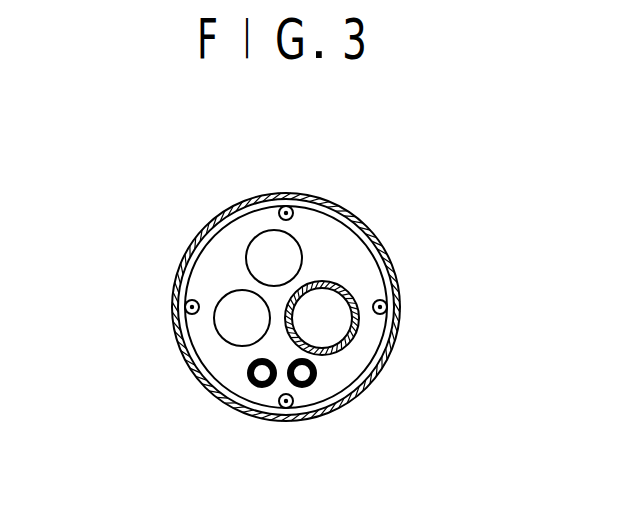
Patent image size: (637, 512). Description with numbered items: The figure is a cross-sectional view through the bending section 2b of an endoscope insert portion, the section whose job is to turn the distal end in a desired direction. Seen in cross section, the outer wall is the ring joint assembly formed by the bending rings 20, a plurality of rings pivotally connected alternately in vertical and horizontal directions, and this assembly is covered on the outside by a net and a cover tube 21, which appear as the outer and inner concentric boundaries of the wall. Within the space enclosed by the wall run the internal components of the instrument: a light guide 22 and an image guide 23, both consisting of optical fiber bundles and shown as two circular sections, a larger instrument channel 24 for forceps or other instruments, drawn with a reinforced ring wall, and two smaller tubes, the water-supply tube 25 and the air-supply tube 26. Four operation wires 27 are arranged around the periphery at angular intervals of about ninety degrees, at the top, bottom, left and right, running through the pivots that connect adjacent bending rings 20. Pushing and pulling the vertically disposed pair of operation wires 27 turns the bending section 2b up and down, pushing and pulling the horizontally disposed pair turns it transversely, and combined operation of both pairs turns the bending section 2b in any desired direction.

The bending section 2b is at (225, 207).
The bending rings 20 is at (358, 217).
The cover tube 21 is at (203, 390).
The light guide 22 is at (246, 262).
The image guide 23 is at (222, 323).
The instrument channel 24 is at (352, 292).
The water-supply tube 25 is at (250, 386).
The air-supply tube 26 is at (313, 380).
The operation wires 27 is at (283, 206).